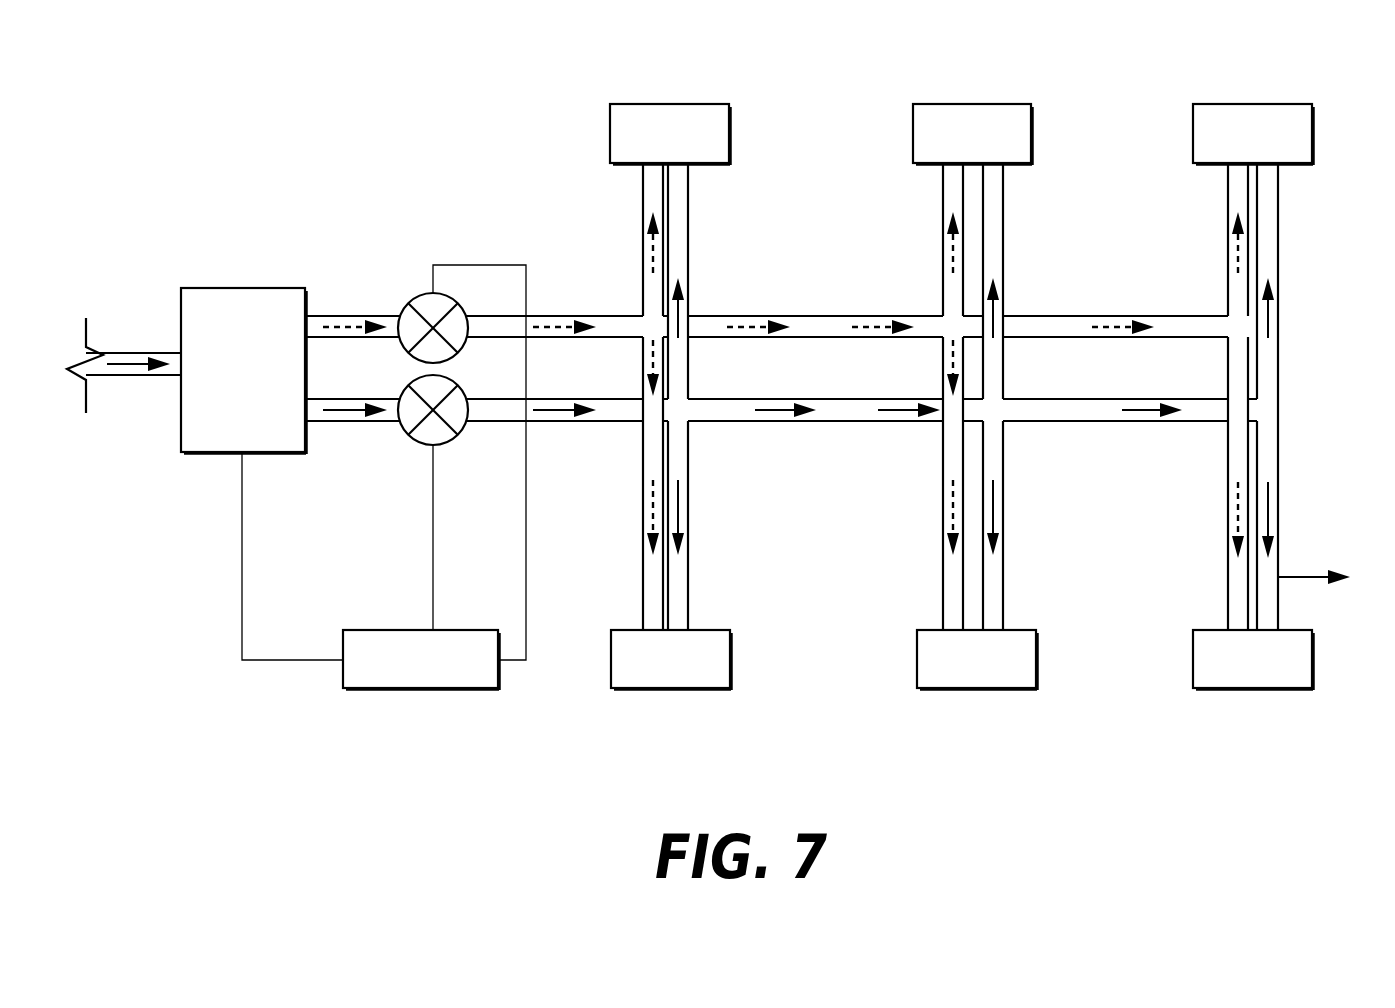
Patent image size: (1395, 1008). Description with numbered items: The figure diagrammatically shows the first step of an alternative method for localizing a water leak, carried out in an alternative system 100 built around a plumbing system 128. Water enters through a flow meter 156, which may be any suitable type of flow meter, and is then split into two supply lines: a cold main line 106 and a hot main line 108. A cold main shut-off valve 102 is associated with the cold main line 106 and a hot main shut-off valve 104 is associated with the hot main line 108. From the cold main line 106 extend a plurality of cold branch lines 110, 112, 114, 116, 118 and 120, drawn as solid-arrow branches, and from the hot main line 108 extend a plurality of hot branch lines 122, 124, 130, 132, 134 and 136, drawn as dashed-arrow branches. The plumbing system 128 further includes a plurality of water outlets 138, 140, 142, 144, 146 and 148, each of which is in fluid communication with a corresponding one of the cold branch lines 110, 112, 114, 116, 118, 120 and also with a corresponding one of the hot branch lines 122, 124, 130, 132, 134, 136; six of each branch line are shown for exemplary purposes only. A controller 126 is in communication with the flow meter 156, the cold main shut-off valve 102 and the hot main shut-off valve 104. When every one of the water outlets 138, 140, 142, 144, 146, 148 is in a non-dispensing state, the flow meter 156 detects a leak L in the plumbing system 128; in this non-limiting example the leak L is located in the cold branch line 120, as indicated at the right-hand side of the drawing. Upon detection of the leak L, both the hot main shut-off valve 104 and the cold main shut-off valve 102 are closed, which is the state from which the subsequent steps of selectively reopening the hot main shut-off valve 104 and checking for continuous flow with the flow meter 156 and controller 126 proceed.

The alternative system 100 is at (432, 134).
The cold main shut-off valve 102 is at (410, 446).
The hot main shut-off valve 104 is at (405, 298).
The cold main line 106 is at (573, 422).
The hot main line 108 is at (573, 312).
The cold branch line 110 is at (688, 192).
The cold branch line 112 is at (1003, 192).
The cold branch line 114 is at (1278, 190).
The cold branch line 116 is at (688, 481).
The cold branch line 118 is at (1003, 481).
The cold branch line 120 is at (1278, 480).
The hot branch line 122 is at (643, 238).
The hot branch line 124 is at (943, 238).
The controller 126 is at (423, 690).
The plumbing system 128 is at (1300, 380).
The hot branch line 130 is at (1228, 238).
The hot branch line 132 is at (643, 570).
The hot branch line 134 is at (943, 570).
The hot branch line 136 is at (1228, 570).
The water outlet 138 is at (680, 104).
The water outlet 140 is at (975, 104).
The water outlet 142 is at (1255, 104).
The water outlet 144 is at (676, 690).
The water outlet 146 is at (978, 690).
The water outlet 148 is at (1255, 690).
The flow meter 156 is at (247, 288).